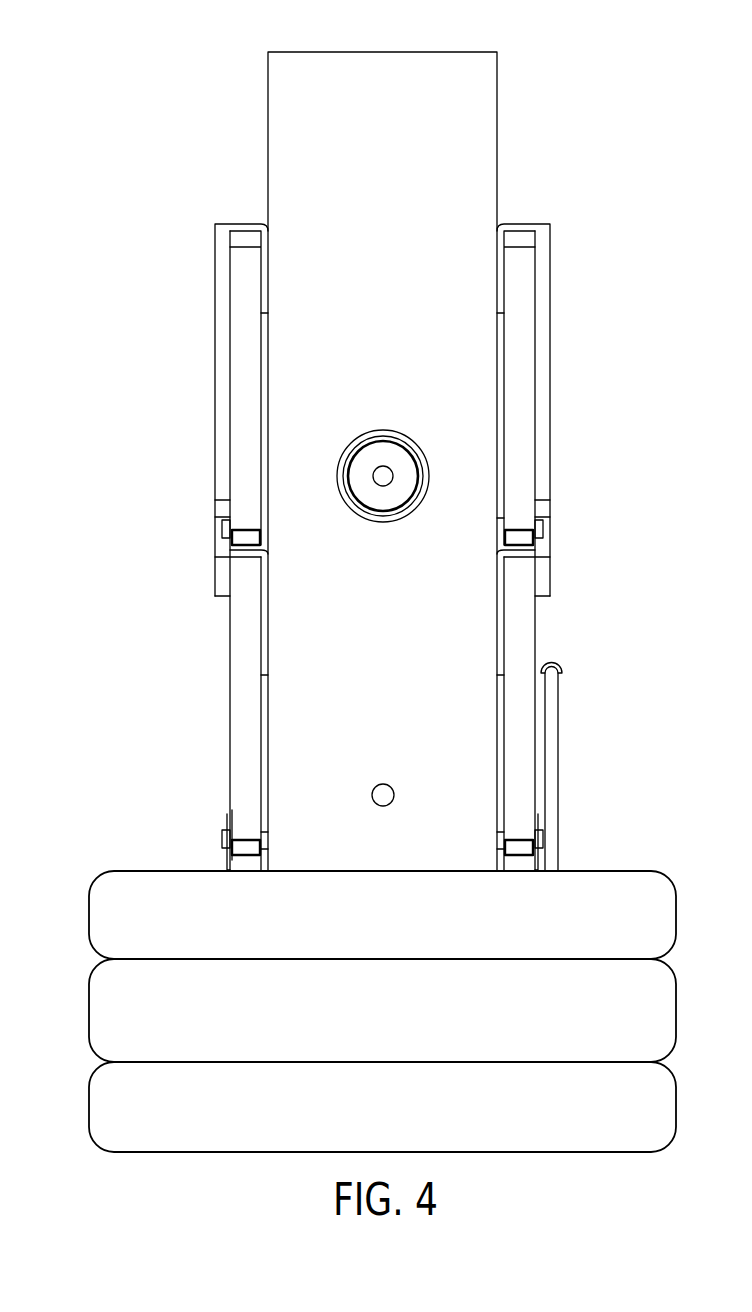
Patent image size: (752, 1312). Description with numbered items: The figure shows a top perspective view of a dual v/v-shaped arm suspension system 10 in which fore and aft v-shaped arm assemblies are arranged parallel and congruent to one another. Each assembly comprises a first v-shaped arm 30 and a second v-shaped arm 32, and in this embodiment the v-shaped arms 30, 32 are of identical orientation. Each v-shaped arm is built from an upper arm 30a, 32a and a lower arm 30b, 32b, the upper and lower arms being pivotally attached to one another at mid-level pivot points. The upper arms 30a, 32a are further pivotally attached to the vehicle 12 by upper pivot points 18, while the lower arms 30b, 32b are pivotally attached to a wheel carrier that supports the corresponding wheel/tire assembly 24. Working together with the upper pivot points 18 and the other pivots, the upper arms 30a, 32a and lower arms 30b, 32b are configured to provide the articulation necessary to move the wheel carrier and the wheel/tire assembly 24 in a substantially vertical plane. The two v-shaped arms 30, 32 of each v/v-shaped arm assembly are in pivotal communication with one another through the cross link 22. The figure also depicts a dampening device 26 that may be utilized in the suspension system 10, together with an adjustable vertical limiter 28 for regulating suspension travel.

The suspension system 10 is at (604, 84).
The vehicle 12 is at (282, 100).
The upper pivot points 18 is at (220, 840).
The cross link 22 is at (221, 463).
The wheel/tire assembly 24 is at (103, 912).
The dampening device 26 is at (376, 452).
The adjustable vertical limiter 28 is at (382, 790).
The first v-shaped arm 30 is at (247, 805).
The upper arm 30a is at (248, 737).
The lower arm 30b is at (518, 737).
The second v-shaped arm 32 is at (519, 495).
The upper arm 32a is at (247, 373).
The lower arm 32b is at (519, 423).